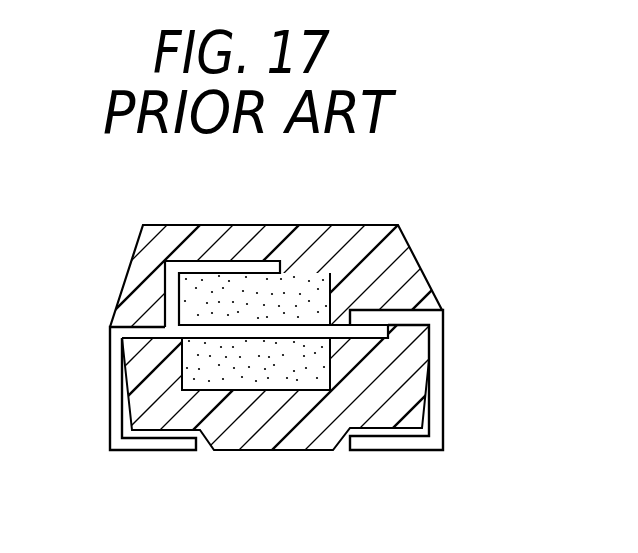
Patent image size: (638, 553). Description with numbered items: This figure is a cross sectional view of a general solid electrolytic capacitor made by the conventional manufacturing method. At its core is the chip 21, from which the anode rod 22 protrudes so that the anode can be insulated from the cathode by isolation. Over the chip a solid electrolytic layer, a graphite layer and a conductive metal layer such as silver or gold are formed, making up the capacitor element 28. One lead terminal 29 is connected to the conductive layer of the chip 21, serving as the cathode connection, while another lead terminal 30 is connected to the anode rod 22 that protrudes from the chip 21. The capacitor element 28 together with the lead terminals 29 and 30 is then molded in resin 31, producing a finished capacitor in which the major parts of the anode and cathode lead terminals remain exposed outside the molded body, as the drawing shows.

The chip 21 is at (243, 372).
The anode rod 22 is at (373, 333).
The capacitor element 28 is at (313, 268).
The lead terminal 29 is at (110, 398).
The lead terminal 30 is at (443, 408).
The resin 31 is at (200, 226).